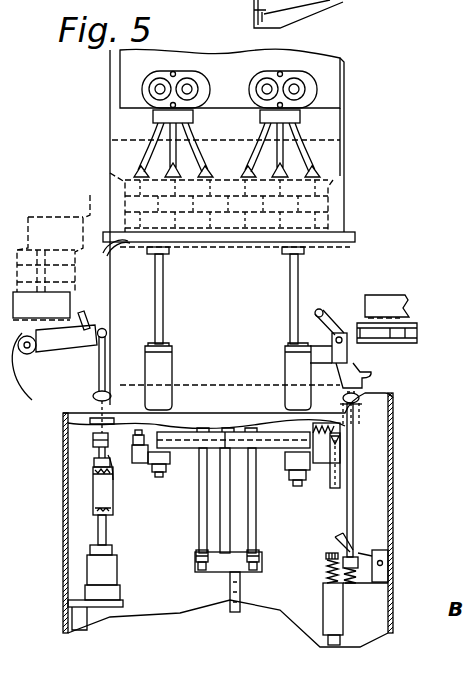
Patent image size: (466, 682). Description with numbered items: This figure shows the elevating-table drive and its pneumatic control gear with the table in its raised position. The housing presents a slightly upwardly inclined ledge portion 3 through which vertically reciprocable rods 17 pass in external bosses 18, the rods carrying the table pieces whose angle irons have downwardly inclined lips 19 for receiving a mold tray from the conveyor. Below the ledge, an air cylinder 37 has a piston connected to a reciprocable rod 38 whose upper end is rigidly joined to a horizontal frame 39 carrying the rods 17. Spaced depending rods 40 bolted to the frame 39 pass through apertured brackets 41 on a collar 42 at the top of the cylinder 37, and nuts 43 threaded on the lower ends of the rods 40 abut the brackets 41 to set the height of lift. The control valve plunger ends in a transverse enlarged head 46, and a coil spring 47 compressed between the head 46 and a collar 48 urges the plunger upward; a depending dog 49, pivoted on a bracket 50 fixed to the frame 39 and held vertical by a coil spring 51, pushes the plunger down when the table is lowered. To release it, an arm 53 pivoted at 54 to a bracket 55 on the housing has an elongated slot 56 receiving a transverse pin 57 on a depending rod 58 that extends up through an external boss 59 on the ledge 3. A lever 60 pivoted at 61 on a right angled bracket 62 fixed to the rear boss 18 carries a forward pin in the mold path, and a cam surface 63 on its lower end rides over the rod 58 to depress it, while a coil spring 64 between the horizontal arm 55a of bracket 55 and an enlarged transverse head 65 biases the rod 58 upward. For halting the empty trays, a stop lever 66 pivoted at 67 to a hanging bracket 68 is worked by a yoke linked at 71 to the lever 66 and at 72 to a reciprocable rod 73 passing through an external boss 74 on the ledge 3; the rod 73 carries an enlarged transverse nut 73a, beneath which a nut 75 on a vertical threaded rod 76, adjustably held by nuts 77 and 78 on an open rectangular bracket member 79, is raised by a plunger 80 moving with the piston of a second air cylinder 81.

The ledge portion 3 is at (75, 397).
The vertically reciprocable rods 17 is at (164, 310).
The external bosses 18 is at (172, 370).
The downwardly inclined lower horizontal lips 19 is at (109, 262).
The air cylinder 37 is at (240, 588).
The reciprocable rod 38 is at (236, 492).
The horizontal frame 39 is at (267, 452).
The depending rods 40 is at (199, 516).
The apertured brackets 41 is at (197, 552).
The collar 42 is at (220, 566).
The nuts 43 is at (197, 566).
The transverse enlarged head 46 is at (326, 560).
The coil spring 47 is at (327, 573).
The collar 48 is at (323, 590).
The depending dog 49 is at (336, 490).
The bracket 50 is at (300, 482).
The coil spring 51 is at (318, 424).
The arm 53 is at (382, 550).
The pivot 54 is at (384, 563).
The bracket 55 is at (389, 570).
The horizontal arm 55a is at (378, 585).
The elongated slot 56 is at (357, 551).
The transverse pin 57 is at (355, 545).
The depending rod 58 is at (354, 472).
The external boss 59 is at (361, 397).
The lever 60 is at (350, 368).
The pivot 61 is at (341, 337).
The right angled bracket 62 is at (322, 310).
The cam surface 63 is at (363, 399).
The coil spring 64 is at (350, 572).
The enlarged transverse head 65 is at (346, 552).
The stop lever 66 is at (52, 355).
The pivot 67 is at (26, 376).
The bracket 68 is at (23, 361).
The pivot link 71 is at (95, 313).
The pivot link 72 is at (107, 336).
The reciprocable rod 73 is at (106, 366).
The enlarged transverse nut 73a is at (98, 428).
The external boss 74 is at (98, 391).
The nut 75 is at (138, 464).
The vertical threaded rod 76 is at (94, 453).
The nut 77 is at (109, 456).
The nut 78 is at (98, 472).
The open rectangular bracket member 79 is at (113, 500).
The plunger 80 is at (106, 535).
The air cylinder 81 is at (110, 572).